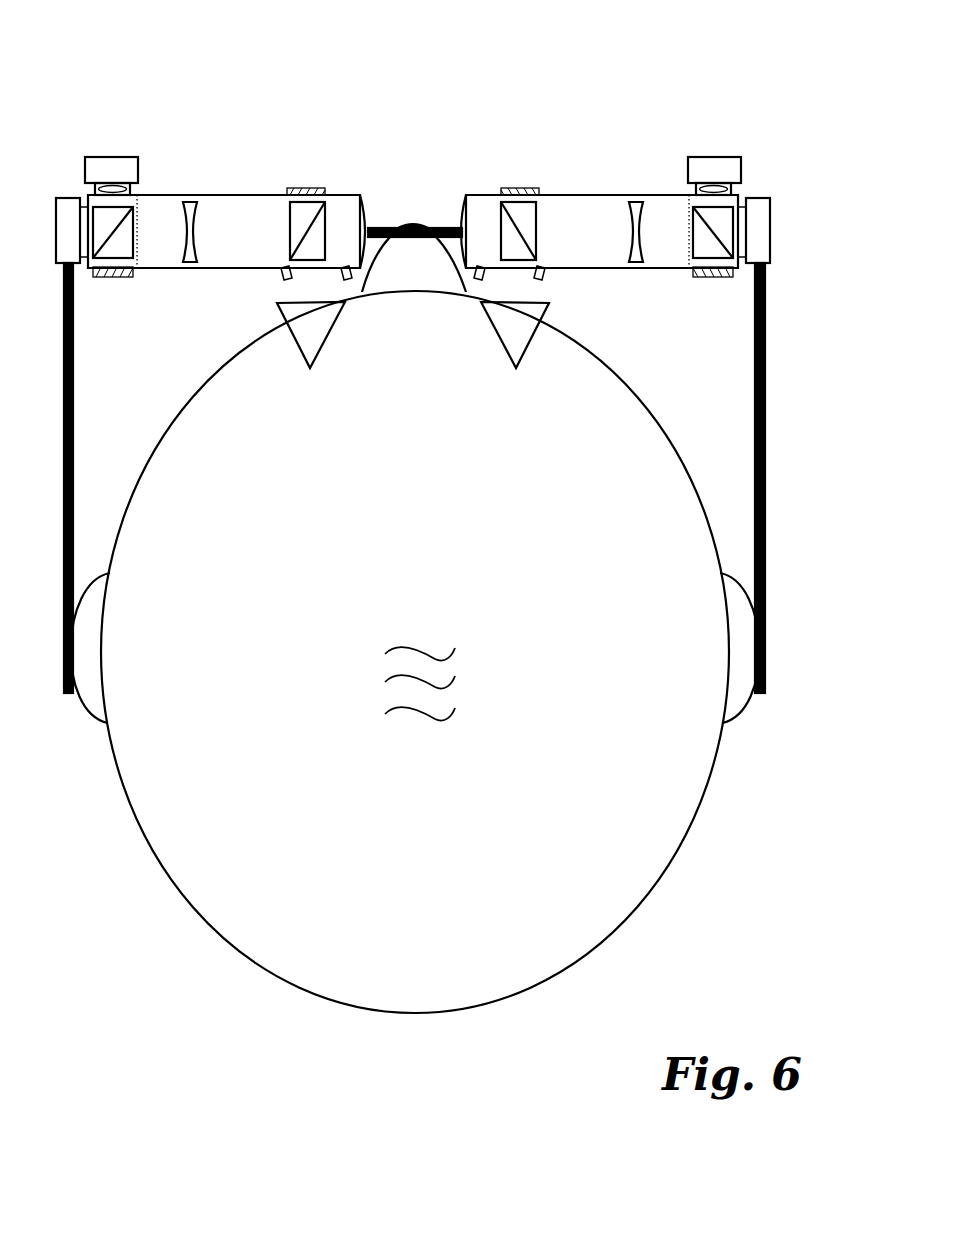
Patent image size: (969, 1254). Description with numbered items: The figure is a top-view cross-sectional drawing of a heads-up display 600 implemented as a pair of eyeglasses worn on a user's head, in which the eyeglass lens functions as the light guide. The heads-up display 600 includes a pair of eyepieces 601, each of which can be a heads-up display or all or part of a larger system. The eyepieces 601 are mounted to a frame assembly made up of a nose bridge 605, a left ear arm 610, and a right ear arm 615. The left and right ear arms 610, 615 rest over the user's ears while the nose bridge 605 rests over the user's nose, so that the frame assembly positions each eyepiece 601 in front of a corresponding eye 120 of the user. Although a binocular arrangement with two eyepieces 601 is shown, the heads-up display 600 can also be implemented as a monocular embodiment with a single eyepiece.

The heads-up display 600 is at (660, 50).
The eyepiece 601 is at (213, 180).
The nose bridge 605 is at (446, 229).
The left ear arm 610 is at (64, 432).
The right ear arm 615 is at (764, 412).
The eye 120 is at (310, 370).